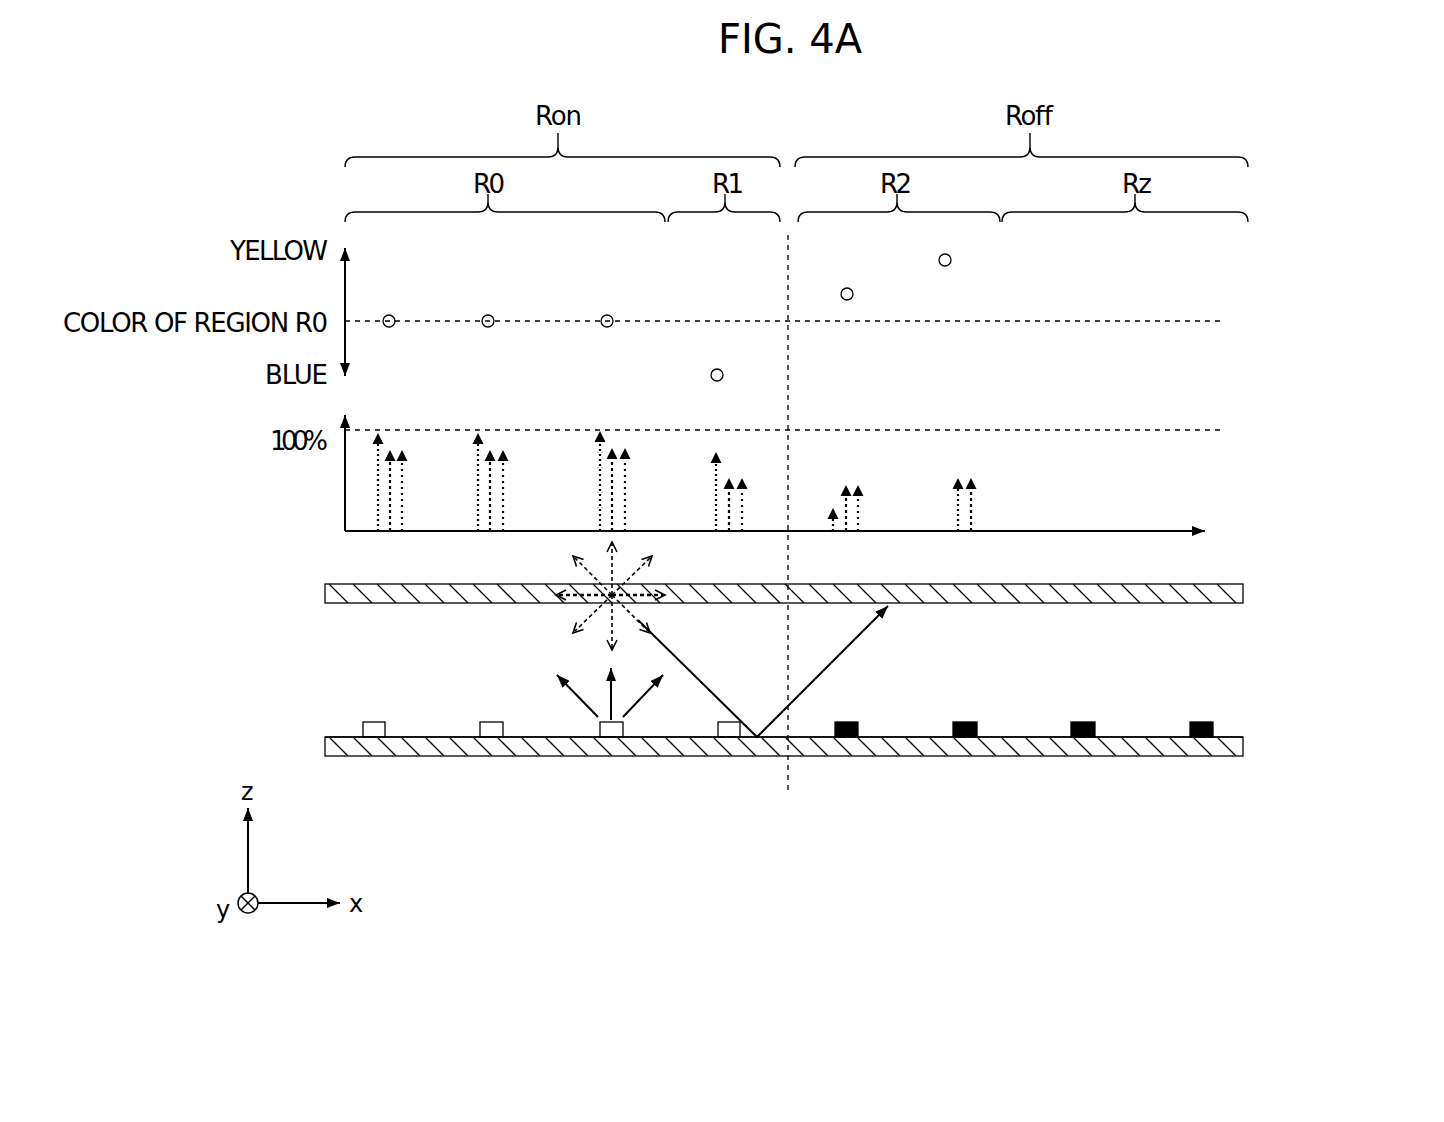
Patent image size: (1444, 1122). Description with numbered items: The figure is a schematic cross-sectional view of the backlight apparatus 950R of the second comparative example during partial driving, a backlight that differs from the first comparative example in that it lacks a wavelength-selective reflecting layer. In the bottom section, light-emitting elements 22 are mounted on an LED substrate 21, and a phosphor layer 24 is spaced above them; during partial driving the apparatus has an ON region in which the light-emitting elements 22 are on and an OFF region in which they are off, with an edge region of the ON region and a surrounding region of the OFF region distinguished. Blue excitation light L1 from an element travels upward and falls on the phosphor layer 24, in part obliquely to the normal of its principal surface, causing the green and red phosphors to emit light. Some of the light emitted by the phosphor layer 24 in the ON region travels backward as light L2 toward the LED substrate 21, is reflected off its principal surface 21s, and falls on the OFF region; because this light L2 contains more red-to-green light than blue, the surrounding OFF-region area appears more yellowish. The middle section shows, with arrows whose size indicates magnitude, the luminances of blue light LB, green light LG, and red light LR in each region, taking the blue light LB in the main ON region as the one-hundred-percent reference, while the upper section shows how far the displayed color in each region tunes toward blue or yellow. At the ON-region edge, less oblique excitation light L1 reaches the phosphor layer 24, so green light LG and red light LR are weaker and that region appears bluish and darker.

The backlight apparatus 950R is at (880, 632).
The phosphor layer 24 is at (1243, 598).
The principal surface 21s is at (1150, 737).
The light-emitting elements 22 is at (1205, 722).
The LED substrate 21 is at (1243, 750).
The excitation light L1 is at (580, 703).
The light emitted backward L2 is at (848, 650).
The blue light LB is at (378, 477).
The green light LG is at (958, 515).
The red light LR is at (402, 478).